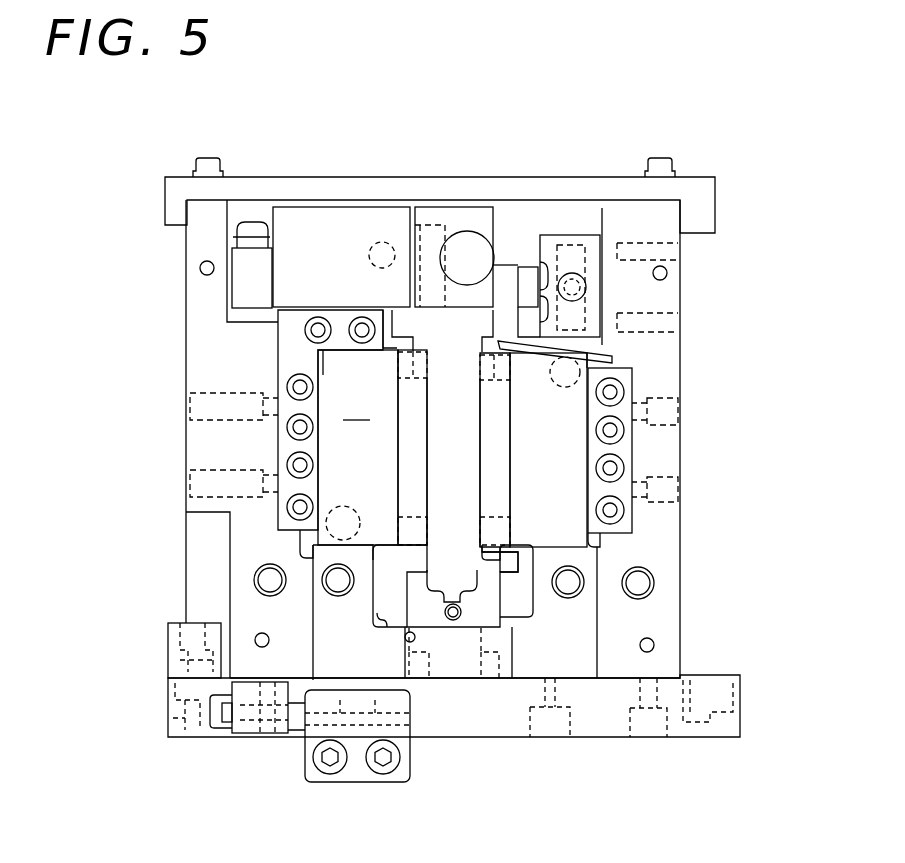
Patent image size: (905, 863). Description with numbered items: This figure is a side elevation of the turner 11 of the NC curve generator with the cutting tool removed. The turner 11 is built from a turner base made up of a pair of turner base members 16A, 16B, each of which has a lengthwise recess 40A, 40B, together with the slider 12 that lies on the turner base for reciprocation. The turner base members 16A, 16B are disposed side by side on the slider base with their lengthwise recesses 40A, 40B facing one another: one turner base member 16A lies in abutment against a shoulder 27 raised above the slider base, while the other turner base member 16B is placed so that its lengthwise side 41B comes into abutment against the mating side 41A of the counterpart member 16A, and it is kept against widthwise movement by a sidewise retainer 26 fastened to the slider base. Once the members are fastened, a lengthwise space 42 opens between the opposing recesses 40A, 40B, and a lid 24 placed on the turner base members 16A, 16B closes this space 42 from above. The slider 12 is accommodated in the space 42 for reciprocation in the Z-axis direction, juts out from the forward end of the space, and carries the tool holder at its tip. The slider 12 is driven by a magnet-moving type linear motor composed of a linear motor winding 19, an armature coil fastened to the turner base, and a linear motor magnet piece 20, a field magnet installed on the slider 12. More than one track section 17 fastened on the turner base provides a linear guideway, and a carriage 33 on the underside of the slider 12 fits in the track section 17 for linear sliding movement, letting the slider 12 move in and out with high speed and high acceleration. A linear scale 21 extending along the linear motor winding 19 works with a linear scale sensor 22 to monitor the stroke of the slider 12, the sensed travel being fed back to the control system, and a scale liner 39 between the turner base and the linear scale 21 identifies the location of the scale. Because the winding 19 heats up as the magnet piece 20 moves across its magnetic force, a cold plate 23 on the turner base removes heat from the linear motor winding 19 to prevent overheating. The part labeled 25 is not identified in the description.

The turner 11 is at (612, 168).
The slider 12 is at (458, 425).
The turner base member 16A is at (625, 620).
The turner base member 16B is at (245, 540).
The track section 17 is at (546, 250).
The linear motor winding 19 is at (550, 452).
The linear motor magnet piece 20 is at (408, 453).
The linear scale 21 is at (323, 232).
The linear scale sensor 22 is at (465, 218).
The cold plate 23 is at (287, 383).
The lid 24 is at (370, 185).
The leaf spring 25 is at (613, 353).
The sidewise retainer 26 is at (168, 622).
The shoulder 27 is at (683, 665).
The carriage 33 is at (530, 283).
The scale liner 39 is at (248, 264).
The lengthwise recess 40A is at (530, 605).
The lengthwise recess 40B is at (315, 547).
The mating side 41A is at (407, 658).
The lengthwise side 41B is at (410, 637).
The lengthwise space 42 is at (507, 577).